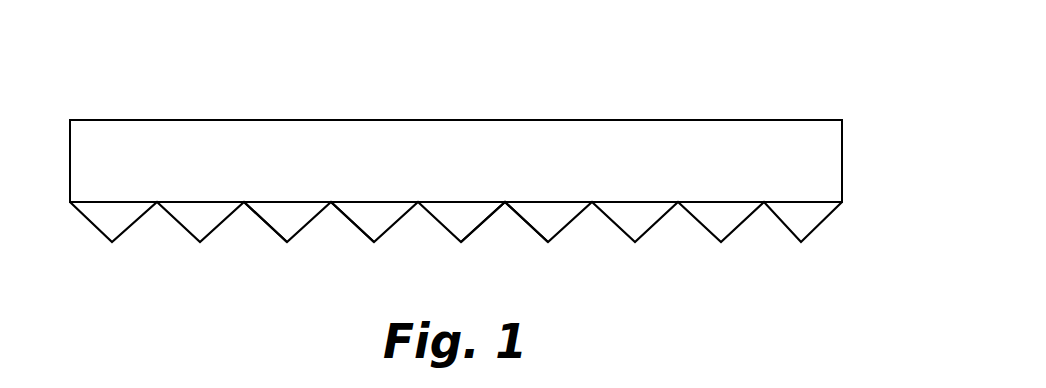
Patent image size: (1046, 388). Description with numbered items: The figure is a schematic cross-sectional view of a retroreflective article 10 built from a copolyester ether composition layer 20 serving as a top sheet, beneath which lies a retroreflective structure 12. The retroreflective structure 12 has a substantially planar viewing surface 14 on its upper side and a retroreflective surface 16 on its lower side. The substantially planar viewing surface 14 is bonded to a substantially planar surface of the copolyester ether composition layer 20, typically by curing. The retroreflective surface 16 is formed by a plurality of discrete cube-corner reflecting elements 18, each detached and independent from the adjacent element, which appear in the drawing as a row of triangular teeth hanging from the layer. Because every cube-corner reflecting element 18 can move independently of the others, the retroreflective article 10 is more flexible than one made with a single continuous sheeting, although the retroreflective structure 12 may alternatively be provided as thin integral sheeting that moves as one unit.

The retroreflective article 10 is at (445, 166).
The retroreflective structure 12 is at (95, 237).
The substantially planar viewing surface 14 is at (267, 205).
The retroreflective surface 16 is at (357, 228).
The cube-corner reflecting elements 18 is at (537, 215).
The copolyester ether composition layer 20 is at (243, 120).